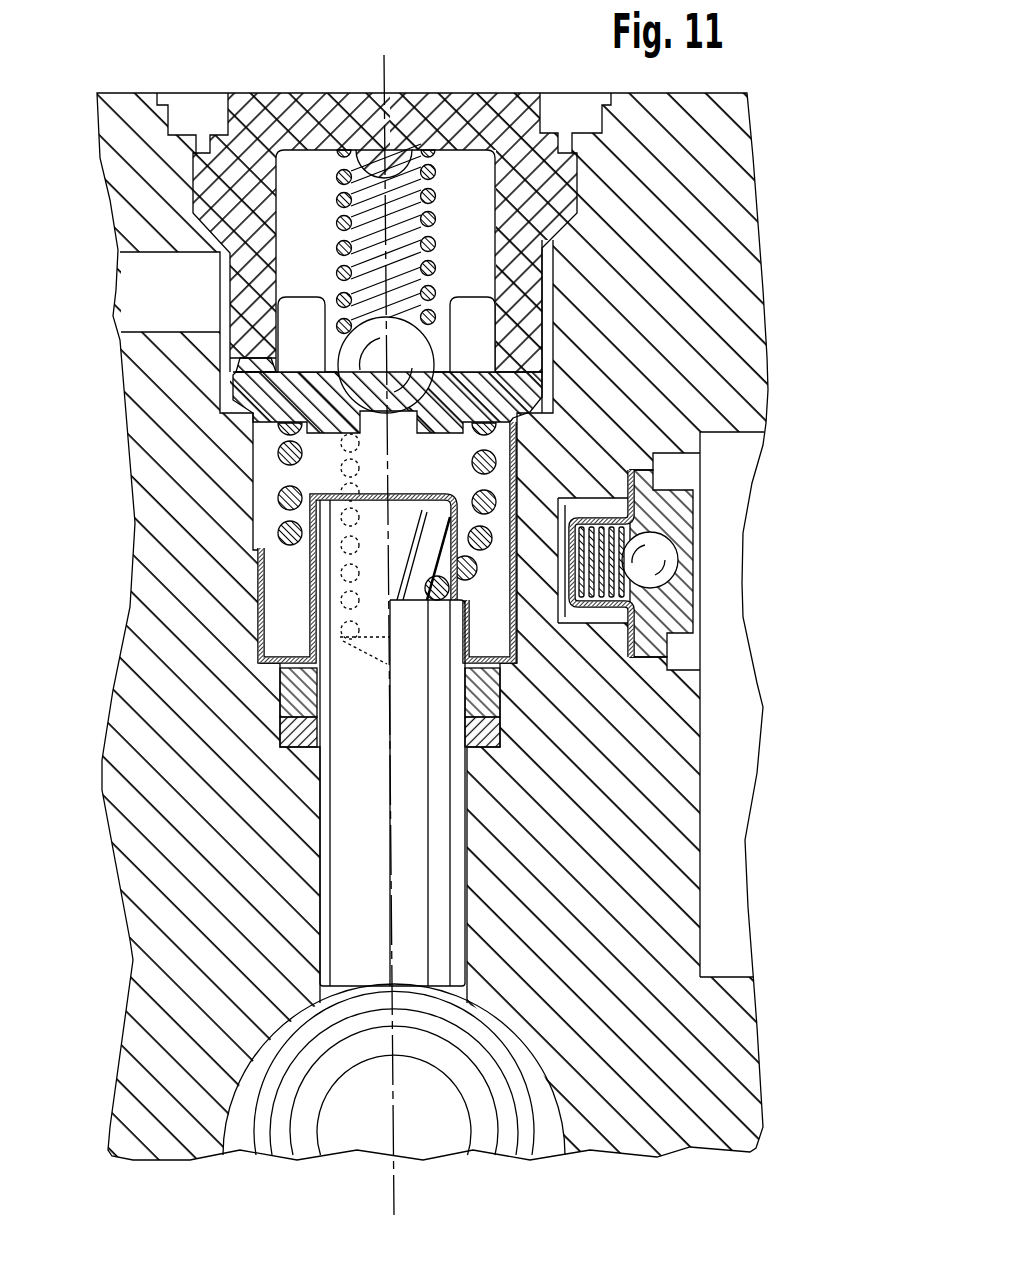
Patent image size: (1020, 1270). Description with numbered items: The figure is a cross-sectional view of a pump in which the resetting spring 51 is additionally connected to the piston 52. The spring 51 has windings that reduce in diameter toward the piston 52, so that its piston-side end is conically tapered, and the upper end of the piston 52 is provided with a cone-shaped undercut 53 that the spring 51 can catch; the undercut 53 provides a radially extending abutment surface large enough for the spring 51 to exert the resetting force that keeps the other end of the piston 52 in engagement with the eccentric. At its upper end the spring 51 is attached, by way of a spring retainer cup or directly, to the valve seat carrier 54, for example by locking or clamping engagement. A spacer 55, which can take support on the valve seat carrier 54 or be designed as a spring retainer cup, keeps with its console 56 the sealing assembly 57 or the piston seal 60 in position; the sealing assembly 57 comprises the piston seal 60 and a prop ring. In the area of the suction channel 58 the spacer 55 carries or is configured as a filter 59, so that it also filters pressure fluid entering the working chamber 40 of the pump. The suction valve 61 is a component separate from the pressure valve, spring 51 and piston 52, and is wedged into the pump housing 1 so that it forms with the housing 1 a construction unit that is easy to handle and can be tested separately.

The pump housing 1 is at (718, 117).
The working chamber 40 is at (300, 468).
The resetting spring 51 is at (505, 425).
The piston 52 is at (437, 827).
The undercut 53 is at (442, 553).
The valve seat carrier 54 is at (250, 397).
The spacer 55 is at (523, 452).
The console 56 is at (515, 648).
The sealing assembly 57 is at (248, 722).
The suction channel 58 is at (525, 592).
The filter 59 is at (560, 468).
The piston seal 60 is at (497, 693).
The suction valve 61 is at (667, 515).